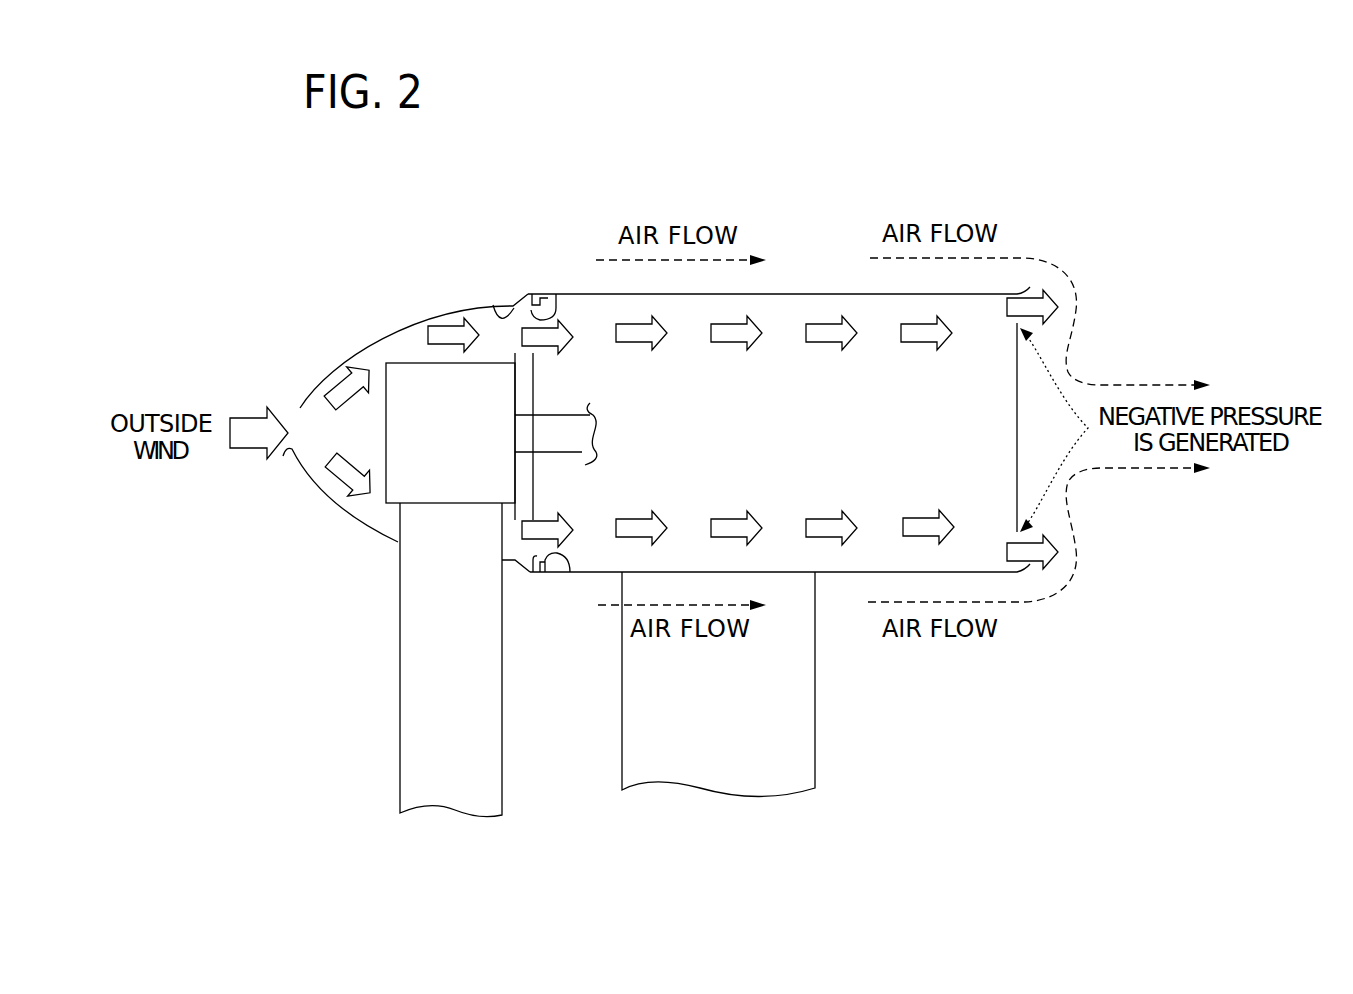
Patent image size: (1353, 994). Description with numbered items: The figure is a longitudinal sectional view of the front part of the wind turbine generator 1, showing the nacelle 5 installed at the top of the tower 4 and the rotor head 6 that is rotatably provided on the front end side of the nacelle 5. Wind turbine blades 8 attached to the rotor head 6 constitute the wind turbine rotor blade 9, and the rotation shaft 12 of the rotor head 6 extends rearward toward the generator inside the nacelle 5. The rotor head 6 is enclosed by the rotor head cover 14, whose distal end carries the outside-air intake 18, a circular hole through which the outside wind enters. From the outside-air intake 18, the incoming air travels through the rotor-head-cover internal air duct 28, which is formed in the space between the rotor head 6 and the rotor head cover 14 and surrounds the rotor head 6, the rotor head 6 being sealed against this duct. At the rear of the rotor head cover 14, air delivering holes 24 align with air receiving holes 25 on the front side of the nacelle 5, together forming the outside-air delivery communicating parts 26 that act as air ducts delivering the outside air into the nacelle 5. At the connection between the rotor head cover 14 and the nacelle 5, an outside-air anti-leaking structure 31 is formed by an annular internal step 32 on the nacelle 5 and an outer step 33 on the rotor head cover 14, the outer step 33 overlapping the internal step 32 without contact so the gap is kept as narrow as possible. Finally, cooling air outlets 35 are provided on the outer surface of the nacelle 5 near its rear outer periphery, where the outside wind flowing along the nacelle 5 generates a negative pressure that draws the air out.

The wind turbine generator 1 is at (724, 135).
The tower 4 is at (815, 702).
The nacelle 5 is at (792, 292).
The rotor head 6 is at (372, 399).
The wind turbine blade 8 is at (387, 660).
The wind turbine rotor blade 9 is at (400, 681).
The rotation shaft 12 is at (556, 453).
The rotor head cover 14 is at (328, 372).
The outside-air intake 18 is at (289, 452).
The air delivering holes 24 is at (494, 305).
The air receiving holes 25 is at (556, 300).
The outside-air delivery communicating parts 26 is at (512, 225).
The rotor-head-cover internal air duct 28 is at (414, 338).
The outside-air anti-leaking structure 31 is at (552, 630).
The internal step 32 is at (568, 575).
The outer step 33 is at (533, 575).
The cooling air outlets 35 is at (1020, 296).